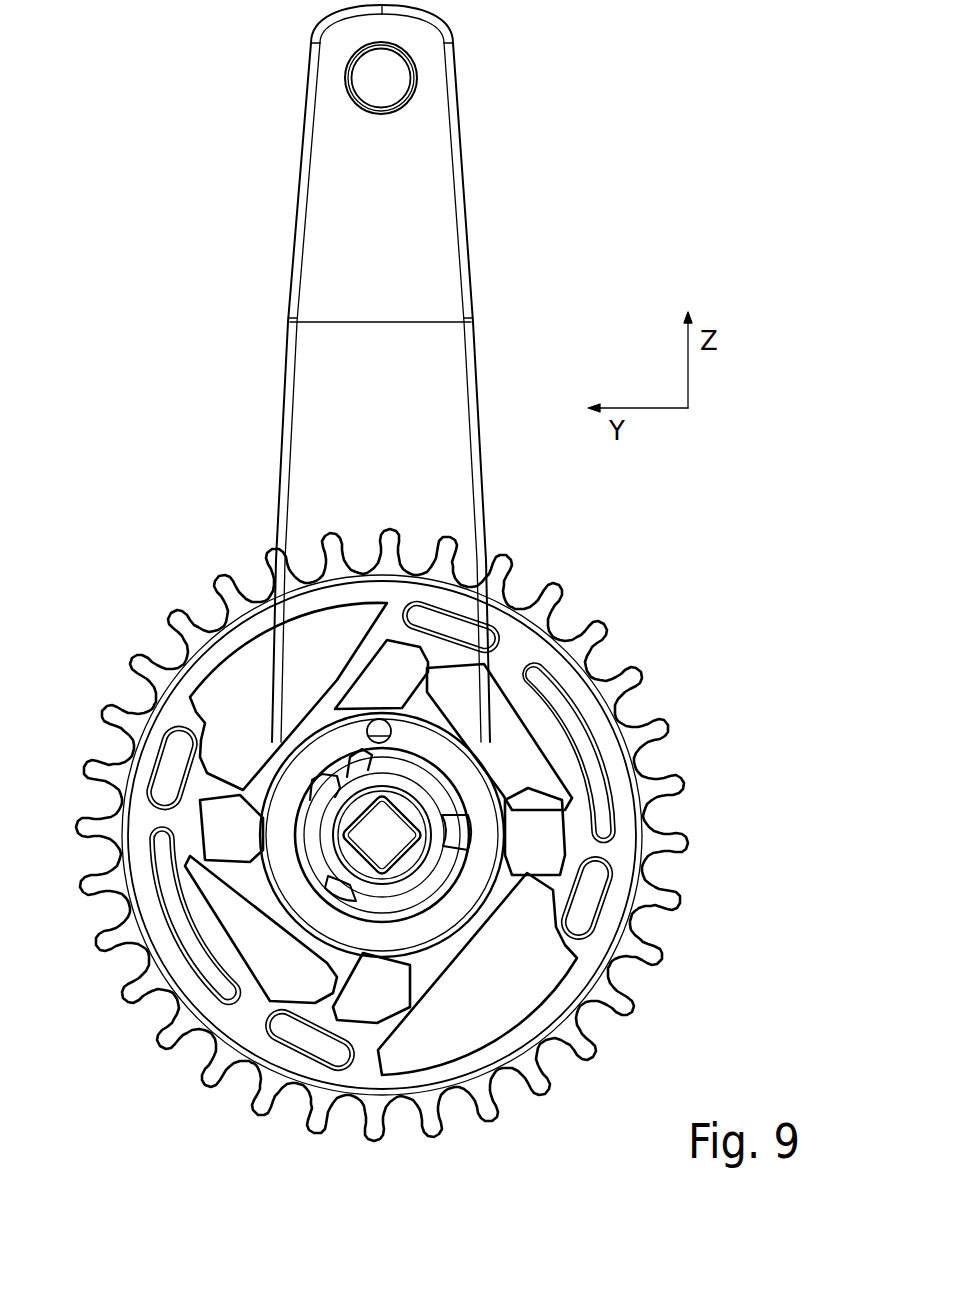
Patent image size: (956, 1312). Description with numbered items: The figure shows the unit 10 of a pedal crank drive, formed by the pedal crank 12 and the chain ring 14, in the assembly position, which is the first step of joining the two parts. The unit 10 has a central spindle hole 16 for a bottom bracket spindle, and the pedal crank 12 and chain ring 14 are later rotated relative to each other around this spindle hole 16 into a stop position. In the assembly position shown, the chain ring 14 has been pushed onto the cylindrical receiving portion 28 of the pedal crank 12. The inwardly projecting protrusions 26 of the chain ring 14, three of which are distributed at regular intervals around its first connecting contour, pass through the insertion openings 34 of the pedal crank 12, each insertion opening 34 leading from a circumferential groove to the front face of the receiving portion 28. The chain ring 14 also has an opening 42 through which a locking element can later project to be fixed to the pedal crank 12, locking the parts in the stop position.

The unit 10 is at (201, 285).
The pedal crank 12 is at (481, 388).
The chain ring 14 is at (213, 610).
The spindle hole 16 is at (377, 835).
The protrusion 26 is at (337, 773).
The receiving portion 28 is at (313, 795).
The insertion opening 34 is at (443, 834).
The opening 42 is at (391, 733).